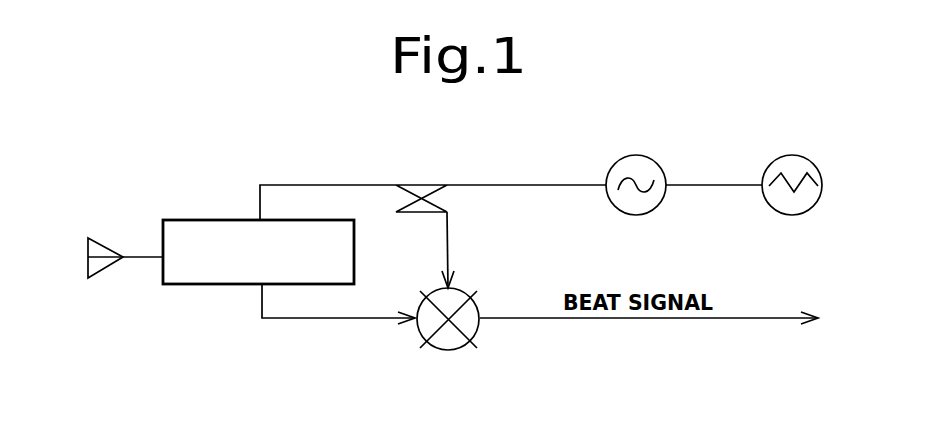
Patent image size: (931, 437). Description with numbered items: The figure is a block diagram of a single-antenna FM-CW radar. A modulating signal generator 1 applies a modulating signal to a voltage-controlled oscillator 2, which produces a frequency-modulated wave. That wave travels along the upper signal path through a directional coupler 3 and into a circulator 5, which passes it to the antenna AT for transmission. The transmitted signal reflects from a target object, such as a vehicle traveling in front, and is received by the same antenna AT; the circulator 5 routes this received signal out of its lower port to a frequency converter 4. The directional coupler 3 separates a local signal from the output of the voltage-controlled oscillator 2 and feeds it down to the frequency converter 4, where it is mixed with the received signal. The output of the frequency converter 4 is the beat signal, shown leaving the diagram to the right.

The modulating signal generator 1 is at (794, 155).
The voltage-controlled oscillator 2 is at (638, 155).
The directional coupler 3 is at (426, 184).
The frequency converter 4 is at (453, 350).
The circulator 5 is at (188, 220).
The antenna AT is at (119, 241).